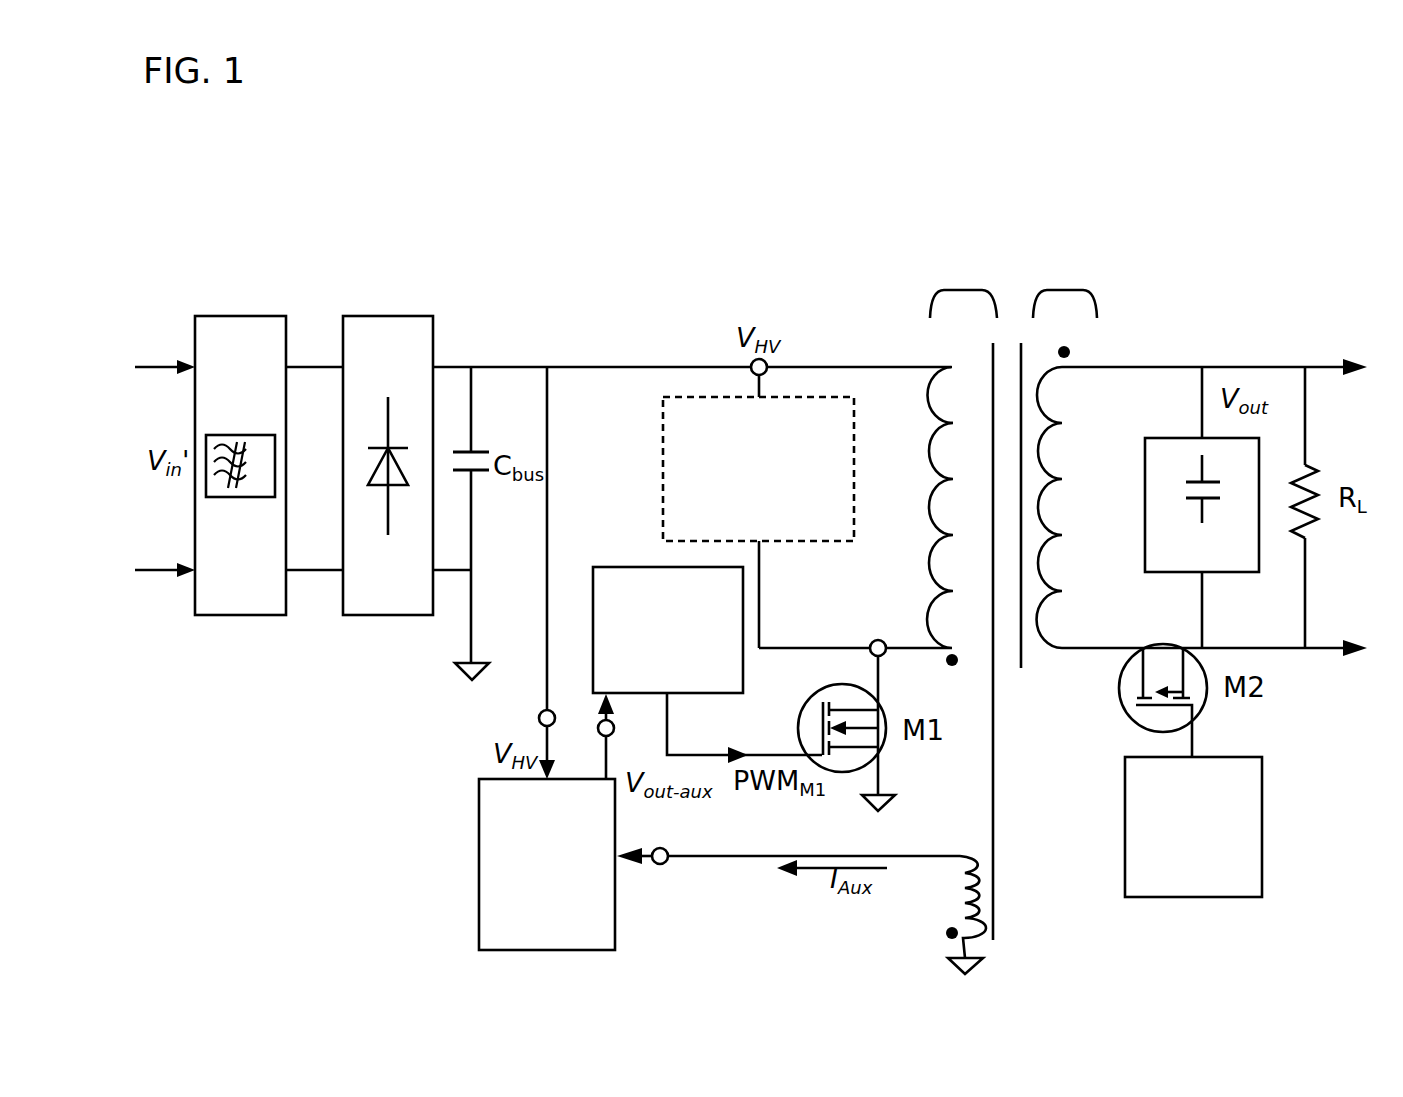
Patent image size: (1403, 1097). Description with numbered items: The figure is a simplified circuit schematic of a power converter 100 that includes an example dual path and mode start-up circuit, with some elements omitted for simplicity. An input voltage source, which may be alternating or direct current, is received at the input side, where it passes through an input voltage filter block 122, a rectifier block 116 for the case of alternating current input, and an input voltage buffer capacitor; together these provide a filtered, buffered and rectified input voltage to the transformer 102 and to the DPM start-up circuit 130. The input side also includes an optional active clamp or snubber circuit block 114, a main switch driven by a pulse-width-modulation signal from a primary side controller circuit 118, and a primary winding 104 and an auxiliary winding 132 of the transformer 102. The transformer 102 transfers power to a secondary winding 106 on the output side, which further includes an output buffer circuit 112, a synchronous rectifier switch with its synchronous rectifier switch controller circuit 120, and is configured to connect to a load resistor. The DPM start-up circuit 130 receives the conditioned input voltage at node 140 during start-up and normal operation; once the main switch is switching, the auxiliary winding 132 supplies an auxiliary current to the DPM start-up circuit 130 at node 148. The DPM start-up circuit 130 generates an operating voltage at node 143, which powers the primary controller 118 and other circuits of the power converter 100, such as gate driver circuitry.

The power converter 100 is at (193, 172).
The transformer 102 is at (1021, 668).
The primary winding 104 is at (963, 290).
The secondary winding 106 is at (1064, 290).
The output buffer circuit 112 is at (1200, 563).
The active clamp or snubber circuit block 114 is at (784, 528).
The rectifier block 116 is at (421, 607).
The primary side controller circuit 118 is at (671, 682).
The synchronous rectifier switch controller circuit 120 is at (1205, 888).
The input voltage filter block 122 is at (276, 607).
The dual path and mode (DPM) start-up circuit 130 is at (558, 942).
The auxiliary winding 132 is at (966, 857).
The node 140 is at (539, 719).
The node 143 is at (614, 734).
The node 148 is at (666, 863).